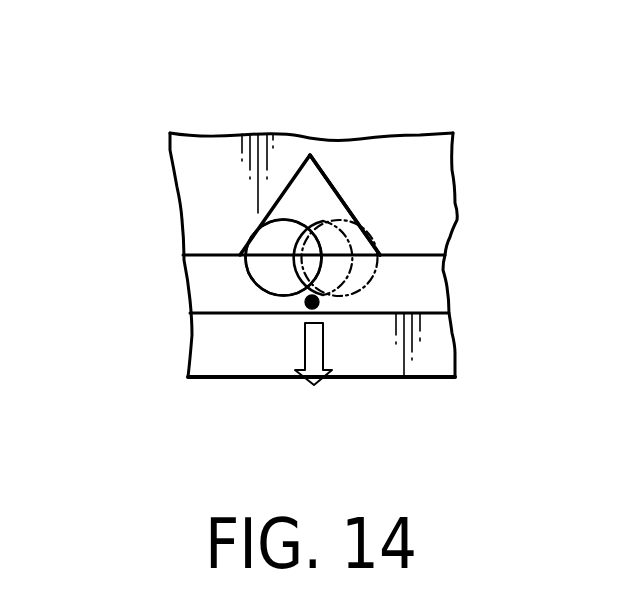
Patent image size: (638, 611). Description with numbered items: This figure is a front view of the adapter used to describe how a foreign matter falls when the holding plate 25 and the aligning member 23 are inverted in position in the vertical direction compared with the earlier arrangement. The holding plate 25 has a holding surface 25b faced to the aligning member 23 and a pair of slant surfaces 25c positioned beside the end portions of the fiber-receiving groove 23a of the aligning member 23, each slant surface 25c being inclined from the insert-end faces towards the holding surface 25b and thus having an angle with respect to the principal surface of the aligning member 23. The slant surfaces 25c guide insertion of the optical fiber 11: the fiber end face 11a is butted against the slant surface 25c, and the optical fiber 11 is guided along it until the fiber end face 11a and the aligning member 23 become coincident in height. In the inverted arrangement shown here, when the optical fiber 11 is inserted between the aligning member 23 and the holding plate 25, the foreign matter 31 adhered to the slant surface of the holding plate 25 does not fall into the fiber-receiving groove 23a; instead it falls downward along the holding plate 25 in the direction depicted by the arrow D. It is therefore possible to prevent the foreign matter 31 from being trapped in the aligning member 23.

The aligning member 23 is at (330, 142).
The fiber-receiving groove 23a is at (334, 186).
The holding plate 25 is at (447, 315).
The holding surface 25b is at (215, 253).
The slant surface 25c is at (430, 282).
The optical fiber 11 is at (256, 285).
The fiber end face 11a is at (262, 270).
The foreign matter 31 is at (319, 303).
The arrow D is at (303, 350).